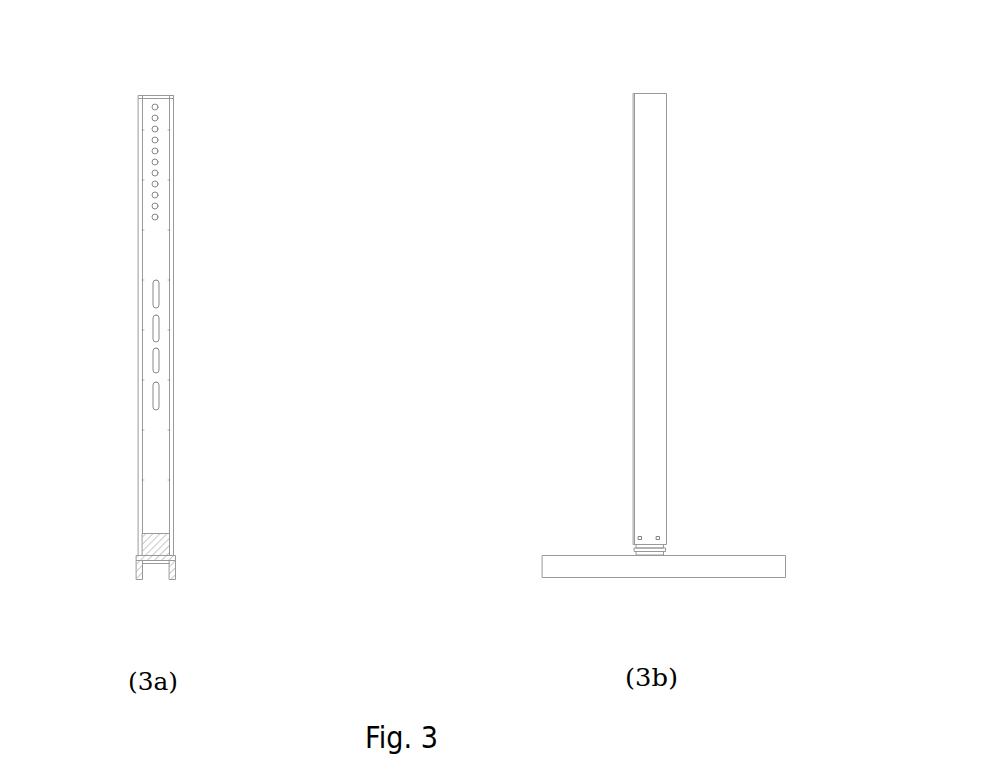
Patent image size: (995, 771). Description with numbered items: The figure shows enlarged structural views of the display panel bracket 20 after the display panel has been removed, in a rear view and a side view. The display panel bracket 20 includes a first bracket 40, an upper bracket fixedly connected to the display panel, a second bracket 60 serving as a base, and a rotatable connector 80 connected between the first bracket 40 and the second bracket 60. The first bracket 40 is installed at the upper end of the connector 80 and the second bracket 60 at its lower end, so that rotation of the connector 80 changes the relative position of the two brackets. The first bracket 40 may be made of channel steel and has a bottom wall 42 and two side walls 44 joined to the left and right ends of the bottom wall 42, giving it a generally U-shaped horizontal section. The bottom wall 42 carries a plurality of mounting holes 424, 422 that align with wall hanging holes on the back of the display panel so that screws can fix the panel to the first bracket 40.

The display panel bracket 20 is at (109, 84).
The first bracket 40 is at (158, 250).
The bottom wall 42 is at (158, 455).
The mounting hole 422 is at (155, 362).
The mounting hole 424 is at (155, 186).
The side wall 44 is at (172, 392).
The second bracket 60 is at (137, 570).
The rotatable connector 80 is at (158, 553).